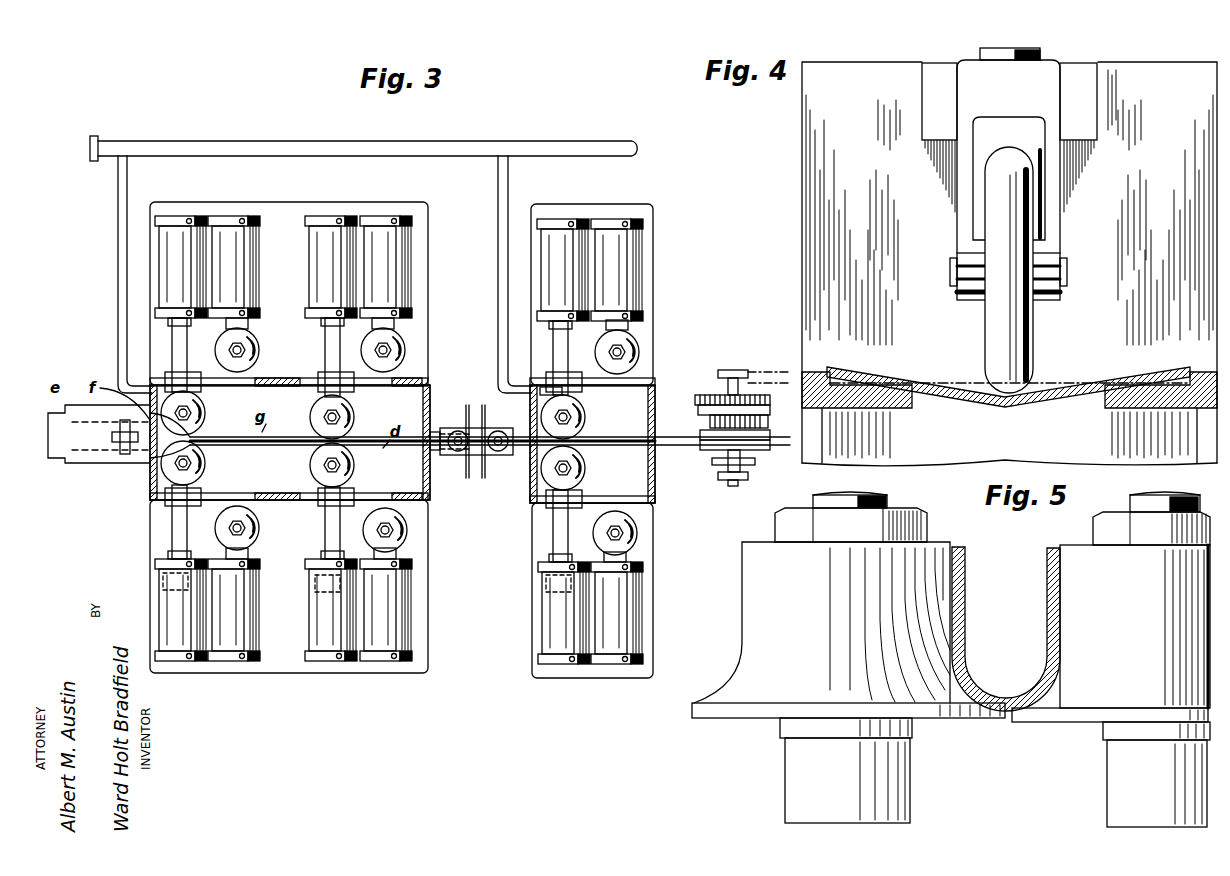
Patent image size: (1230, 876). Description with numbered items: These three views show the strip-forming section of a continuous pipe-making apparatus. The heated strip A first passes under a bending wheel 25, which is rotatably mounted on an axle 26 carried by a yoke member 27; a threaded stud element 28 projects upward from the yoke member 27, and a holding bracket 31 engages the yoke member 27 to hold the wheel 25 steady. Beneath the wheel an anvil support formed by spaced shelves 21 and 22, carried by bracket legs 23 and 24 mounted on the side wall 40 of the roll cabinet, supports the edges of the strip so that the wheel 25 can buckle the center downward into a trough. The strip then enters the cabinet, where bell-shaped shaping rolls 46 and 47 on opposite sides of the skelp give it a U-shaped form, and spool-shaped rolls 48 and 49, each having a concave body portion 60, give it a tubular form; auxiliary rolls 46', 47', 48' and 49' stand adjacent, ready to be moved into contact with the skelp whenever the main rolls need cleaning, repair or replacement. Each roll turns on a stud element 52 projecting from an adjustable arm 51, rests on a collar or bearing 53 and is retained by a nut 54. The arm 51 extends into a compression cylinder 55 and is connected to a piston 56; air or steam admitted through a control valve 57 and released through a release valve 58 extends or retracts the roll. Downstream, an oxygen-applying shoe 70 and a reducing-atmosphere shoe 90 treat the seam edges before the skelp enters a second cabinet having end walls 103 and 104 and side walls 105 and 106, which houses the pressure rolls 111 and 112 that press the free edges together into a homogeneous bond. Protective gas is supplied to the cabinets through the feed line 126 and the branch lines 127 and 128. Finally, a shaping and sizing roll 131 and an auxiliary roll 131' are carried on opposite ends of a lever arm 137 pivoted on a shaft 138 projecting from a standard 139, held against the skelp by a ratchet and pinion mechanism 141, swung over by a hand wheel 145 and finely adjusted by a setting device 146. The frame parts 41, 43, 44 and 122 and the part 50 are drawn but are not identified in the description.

In FIG. 3, the feed line 126 is at (373, 142).
In FIG. 3, the branch line 127 is at (118, 192).
In FIG. 3, the branch line 128 is at (498, 190).
In FIG. 3, the compression cylinder 55 is at (220, 220).
In FIG. 3, the adjustable arm 51 is at (172, 330).
In FIG. 5, the adjustable arm 51 is at (790, 777).
In FIG. 3, the openings or apertures 60 is at (165, 378).
In FIG. 3, the frame 41 is at (430, 392).
In FIG. 3, the frame cross bar 44 is at (256, 378).
In FIG. 3, the frame cross bar 43 is at (267, 500).
In FIG. 3, the side wall 40 is at (152, 484).
In FIG. 4, the side wall 40 is at (1009, 264).
In FIG. 3, the frame end wall 122 is at (432, 486).
In FIG. 3, the end wall 104 is at (656, 382).
In FIG. 3, the side wall 105 is at (538, 487).
In FIG. 3, the side wall 106 is at (656, 487).
In FIG. 3, the end wall 103 is at (650, 505).
In FIG. 3, the pressure roll 111 is at (555, 482).
In FIG. 3, the pressure roll 112 is at (553, 380).
In FIG. 3, the shaping roll 47 is at (197, 413).
In FIG. 5, the shaping roll 47 is at (1109, 615).
In FIG. 3, the spool-shaped forming roll 49 is at (345, 416).
In FIG. 3, the shaping roll 46 is at (161, 481).
In FIG. 5, the shaping roll 46 is at (822, 622).
In FIG. 3, the spool-shaped forming roll 48 is at (351, 465).
In FIG. 3, the auxiliary shaping roll 47' is at (246, 338).
In FIG. 3, the auxiliary spool roll 49' is at (407, 338).
In FIG. 3, the auxiliary shaping roll 46' is at (257, 532).
In FIG. 3, the auxiliary spool roll 48' is at (416, 531).
In FIG. 3, the stud element 52 is at (602, 463).
In FIG. 5, the stud element 52 is at (862, 498).
In FIG. 3, the nut 54 is at (325, 418).
In FIG. 5, the nut 54 is at (910, 518).
In FIG. 3, the strip A is at (60, 460).
In FIG. 4, the strip A is at (1040, 403).
In FIG. 5, the strip A is at (966, 641).
In FIG. 3, the bending wheel 25 is at (118, 432).
In FIG. 4, the bending wheel 25 is at (1012, 326).
In FIG. 3, the axle 26 is at (125, 452).
In FIG. 4, the axle 26 is at (1068, 265).
In FIG. 3, the shoe 90 is at (498, 431).
In FIG. 3, the shoe 70 is at (458, 430).
In FIG. 3, the setting device 146 is at (723, 370).
In FIG. 3, the shaft 138 is at (738, 388).
In FIG. 3, the ratchet and pinion mechanism 141 is at (700, 400).
In FIG. 3, the standard 139 is at (770, 418).
In FIG. 3, the lever arm 137 is at (700, 433).
In FIG. 3, the shaping and sizing roll 131 is at (759, 462).
In FIG. 3, the auxiliary shaping and sizing roll 131' is at (726, 457).
In FIG. 3, the hand wheel 145 is at (740, 486).
In FIG. 3, the control valve 57 is at (185, 566).
In FIG. 3, the piston 56 is at (170, 585).
In FIG. 3, the release valve 58 is at (183, 664).
In FIG. 4, the threaded stud element 28 is at (983, 55).
In FIG. 4, the yoke member 27 is at (1045, 100).
In FIG. 4, the holding bracket 31 is at (940, 120).
In FIG. 4, the shelf 21 is at (885, 420).
In FIG. 4, the shelf 22 is at (1118, 422).
In FIG. 4, the bracket leg 23 is at (815, 456).
In FIG. 4, the bracket leg 24 is at (1200, 446).
In FIG. 5, the roller flange 50 is at (718, 712).
In FIG. 5, the collar or bearing 53 is at (795, 728).